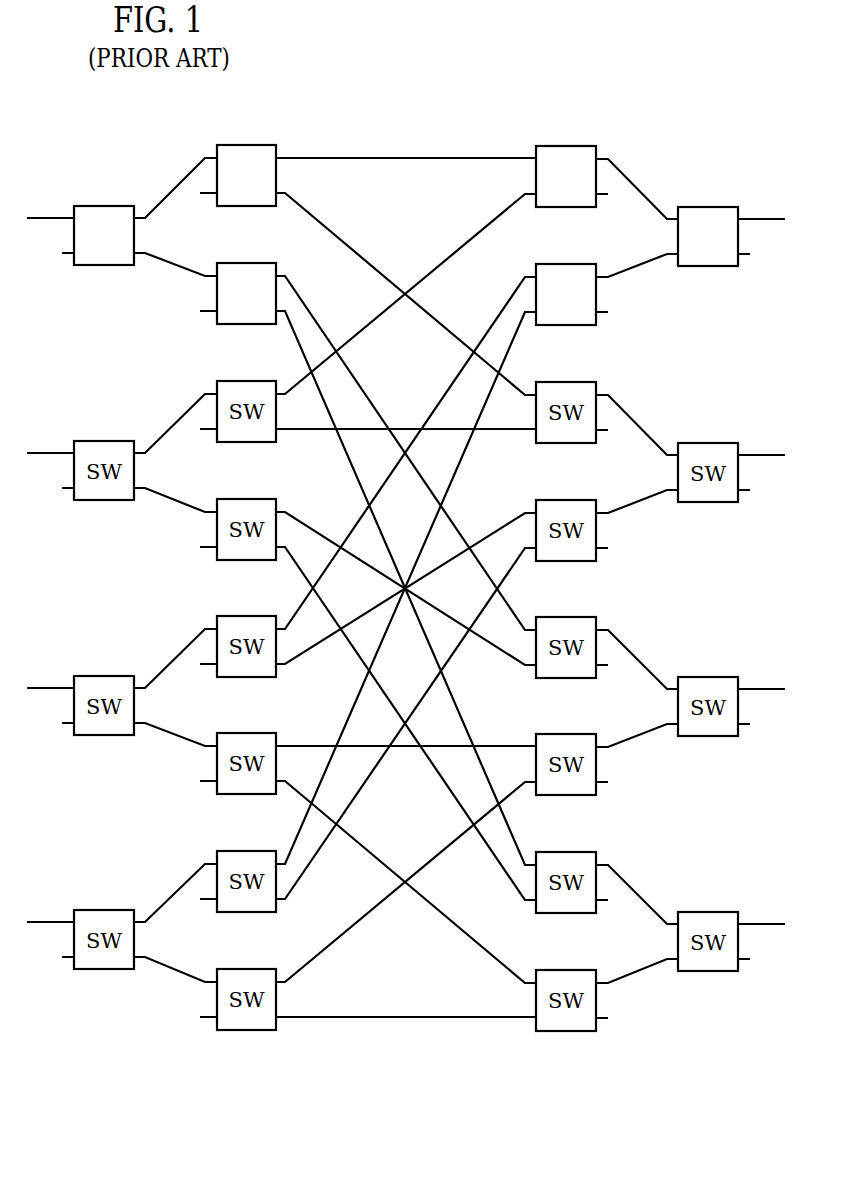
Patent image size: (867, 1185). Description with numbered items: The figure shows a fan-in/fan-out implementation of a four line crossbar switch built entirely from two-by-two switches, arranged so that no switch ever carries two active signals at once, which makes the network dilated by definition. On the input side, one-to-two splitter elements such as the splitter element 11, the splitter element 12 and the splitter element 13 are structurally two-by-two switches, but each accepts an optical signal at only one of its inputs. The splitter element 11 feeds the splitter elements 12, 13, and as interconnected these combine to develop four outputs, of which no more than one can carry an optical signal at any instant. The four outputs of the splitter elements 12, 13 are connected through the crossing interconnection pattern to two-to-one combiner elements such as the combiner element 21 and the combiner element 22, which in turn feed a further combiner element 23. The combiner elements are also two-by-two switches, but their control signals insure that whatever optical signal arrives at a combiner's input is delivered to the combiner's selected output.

The one-to-two splitter element 11 is at (103, 206).
The one-to-two splitter element 12 is at (242, 145).
The one-to-two splitter element 13 is at (240, 263).
The two-to-one combiner element 21 is at (568, 146).
The two-to-one combiner element 22 is at (568, 264).
The two-to-one combiner element 23 is at (698, 207).